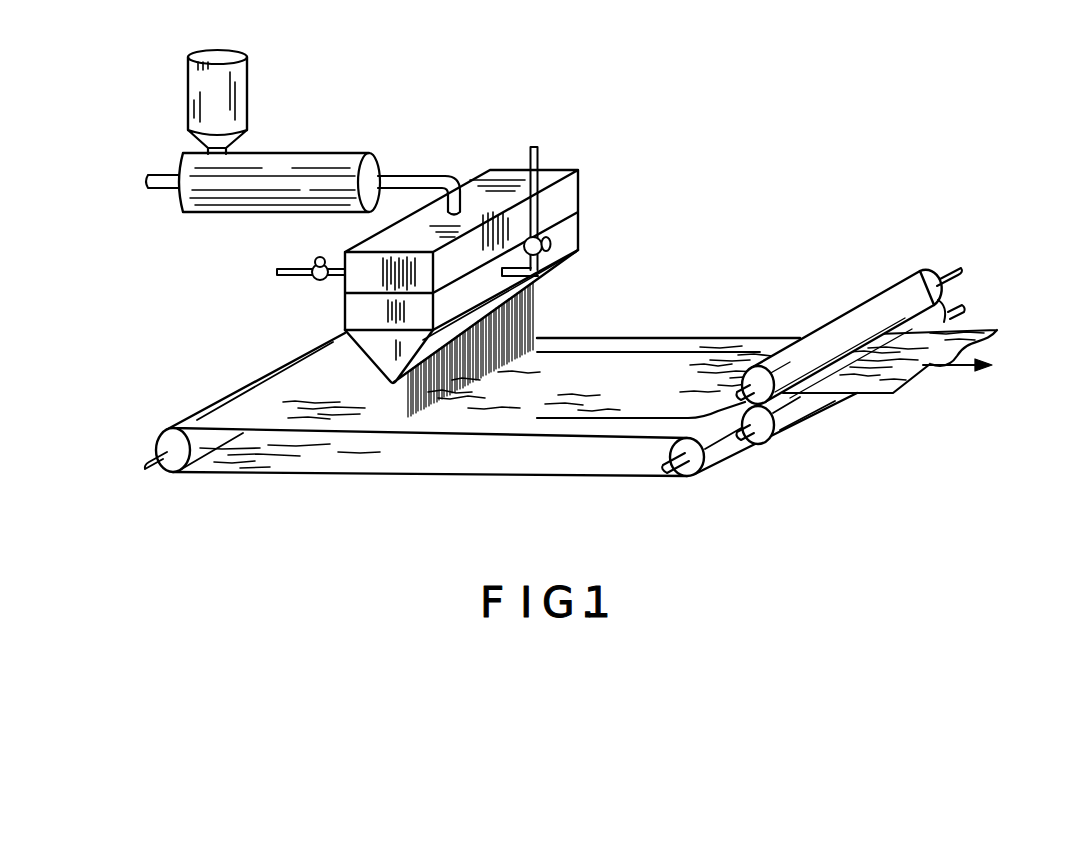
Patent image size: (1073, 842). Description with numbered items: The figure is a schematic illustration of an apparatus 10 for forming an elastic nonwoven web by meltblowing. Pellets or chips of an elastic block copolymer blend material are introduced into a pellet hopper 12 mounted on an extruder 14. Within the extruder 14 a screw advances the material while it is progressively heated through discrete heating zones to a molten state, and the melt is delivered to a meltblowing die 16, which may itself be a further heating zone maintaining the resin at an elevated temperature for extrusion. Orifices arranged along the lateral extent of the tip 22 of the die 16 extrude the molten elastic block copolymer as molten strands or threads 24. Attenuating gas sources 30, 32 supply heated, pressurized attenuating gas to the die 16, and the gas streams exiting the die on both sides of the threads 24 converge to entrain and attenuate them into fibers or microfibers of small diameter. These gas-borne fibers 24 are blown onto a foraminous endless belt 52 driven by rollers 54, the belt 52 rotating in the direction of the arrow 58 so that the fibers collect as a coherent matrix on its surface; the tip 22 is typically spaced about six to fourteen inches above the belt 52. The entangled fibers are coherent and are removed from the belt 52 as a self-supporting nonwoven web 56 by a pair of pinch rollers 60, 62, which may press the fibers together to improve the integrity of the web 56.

The apparatus 10 is at (732, 148).
The pellet hopper 12 is at (192, 102).
The extruder 14 is at (330, 155).
The meltblowing die 16 is at (586, 189).
The tip 22 is at (392, 392).
The molten strands or threads 24 is at (552, 313).
The attenuating gas source 30 is at (538, 157).
The attenuating gas source 32 is at (295, 266).
The foraminous endless belt 52 is at (250, 378).
The rollers 54 is at (165, 431).
The nonwoven web 56 is at (688, 357).
The arrow 58 is at (462, 495).
The pinch roller 60 is at (905, 292).
The pinch roller 62 is at (808, 416).